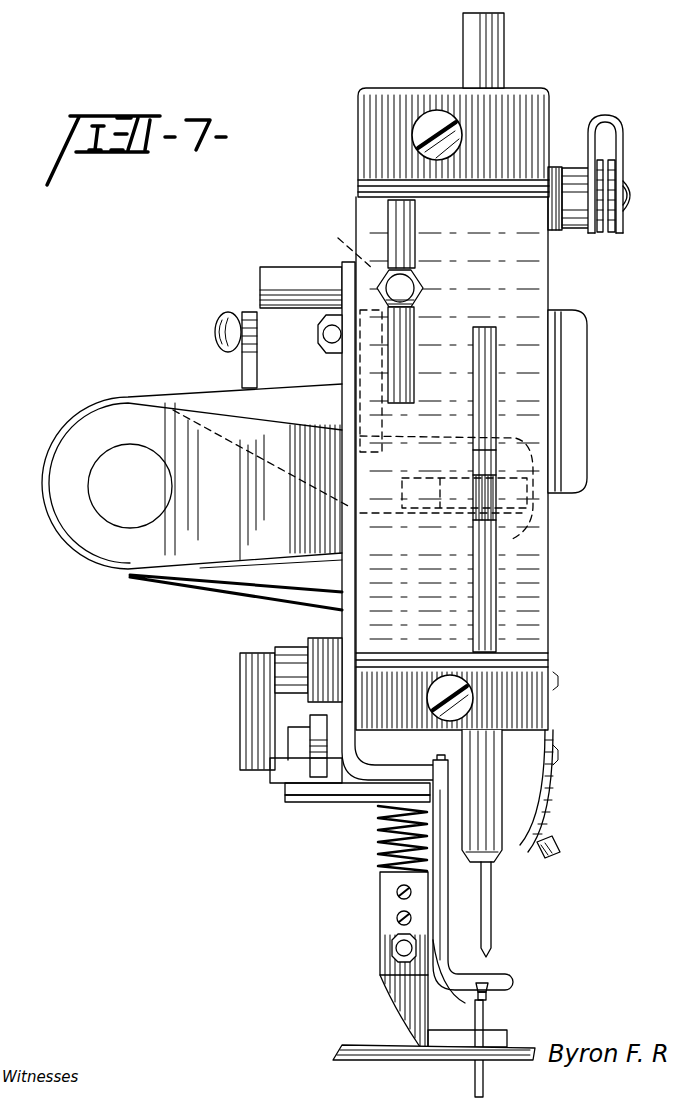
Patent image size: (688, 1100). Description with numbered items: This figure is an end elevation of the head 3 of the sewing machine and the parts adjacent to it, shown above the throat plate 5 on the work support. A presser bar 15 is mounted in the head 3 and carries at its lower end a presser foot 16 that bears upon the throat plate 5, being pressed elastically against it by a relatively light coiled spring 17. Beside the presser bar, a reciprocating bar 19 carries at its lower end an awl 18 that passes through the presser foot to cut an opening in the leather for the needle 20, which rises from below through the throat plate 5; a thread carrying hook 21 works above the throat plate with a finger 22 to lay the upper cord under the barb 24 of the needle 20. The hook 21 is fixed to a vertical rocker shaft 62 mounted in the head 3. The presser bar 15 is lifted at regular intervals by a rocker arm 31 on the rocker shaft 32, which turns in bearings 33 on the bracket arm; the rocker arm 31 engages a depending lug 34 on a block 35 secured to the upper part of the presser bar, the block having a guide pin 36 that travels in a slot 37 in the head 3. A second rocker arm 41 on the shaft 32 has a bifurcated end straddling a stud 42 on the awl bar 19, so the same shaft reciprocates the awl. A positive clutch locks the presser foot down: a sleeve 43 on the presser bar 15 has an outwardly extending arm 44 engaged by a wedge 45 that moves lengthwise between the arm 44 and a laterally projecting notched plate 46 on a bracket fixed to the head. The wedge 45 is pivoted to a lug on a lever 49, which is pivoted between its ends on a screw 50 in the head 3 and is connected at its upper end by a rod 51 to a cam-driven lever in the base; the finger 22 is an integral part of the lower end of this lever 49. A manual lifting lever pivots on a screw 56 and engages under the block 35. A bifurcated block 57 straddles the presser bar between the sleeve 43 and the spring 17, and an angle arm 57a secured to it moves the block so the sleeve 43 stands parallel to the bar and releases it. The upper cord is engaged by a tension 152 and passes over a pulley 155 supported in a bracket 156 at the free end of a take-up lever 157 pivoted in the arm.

The head 3 is at (383, 88).
The throat plate 5 is at (348, 1047).
The presser bar 15 is at (404, 228).
The presser foot 16 is at (387, 973).
The coiled spring 17 is at (378, 843).
The awl 18 is at (483, 897).
The reciprocating bar 19 is at (466, 47).
The needle 20 is at (483, 1022).
The thread carrying hook 21 is at (486, 983).
The finger 22 is at (442, 993).
The barb 24 is at (487, 998).
The rocker arm 31 is at (257, 580).
The rocker shaft 32 is at (107, 508).
The bearings 33 is at (178, 393).
The depending lug 34 is at (435, 389).
The block 35 is at (293, 277).
The guide pin 36 is at (423, 292).
The slot 37 is at (415, 388).
The rocker arm 41 is at (280, 428).
The stud 42 is at (470, 475).
The sleeve 43 is at (377, 787).
The arm 44 is at (290, 782).
The wedge 45 is at (314, 720).
The notched plate 46 is at (247, 731).
The lever 49 is at (342, 360).
The screw 50 is at (333, 668).
The rod 51 is at (318, 333).
The screw 56 is at (228, 322).
The bifurcated block 57 is at (435, 796).
The angle arm 57a is at (318, 800).
The rocker shaft 62 is at (447, 897).
The tension 152 is at (553, 797).
The pulley 155 is at (612, 176).
The bracket 156 is at (617, 120).
The take-up lever 157 is at (573, 230).